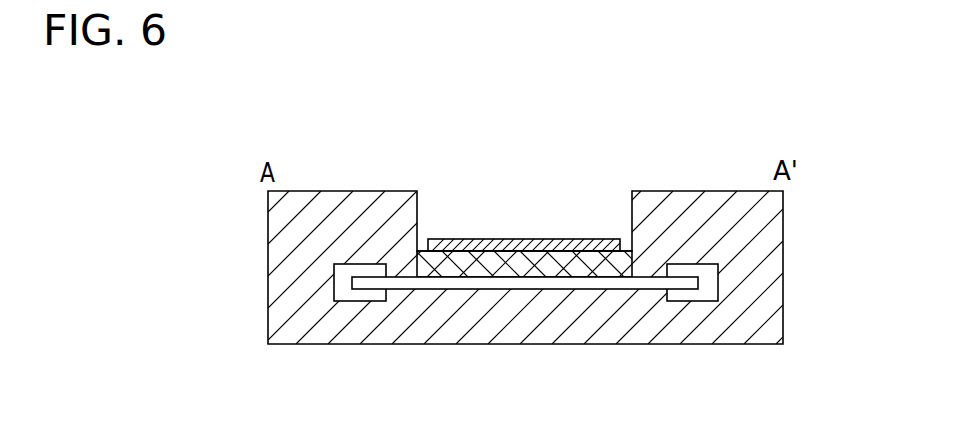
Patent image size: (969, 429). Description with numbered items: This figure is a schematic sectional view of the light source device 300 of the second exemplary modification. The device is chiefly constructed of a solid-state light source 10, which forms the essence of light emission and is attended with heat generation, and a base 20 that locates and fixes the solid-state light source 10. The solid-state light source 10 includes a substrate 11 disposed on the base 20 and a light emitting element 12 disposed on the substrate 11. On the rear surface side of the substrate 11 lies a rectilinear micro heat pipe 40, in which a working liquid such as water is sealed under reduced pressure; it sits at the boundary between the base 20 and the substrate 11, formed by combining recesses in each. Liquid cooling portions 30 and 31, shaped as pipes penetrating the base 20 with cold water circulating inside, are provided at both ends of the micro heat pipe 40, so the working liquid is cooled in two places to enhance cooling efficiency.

The light source device 300 is at (862, 109).
The base 20 is at (770, 265).
The solid-state light source 10 is at (474, 224).
The substrate 11 is at (524, 262).
The light emitting element 12 is at (590, 239).
The liquid cooling portion 30 is at (352, 302).
The liquid cooling portion 31 is at (700, 302).
The micro heat pipe 40 is at (518, 290).